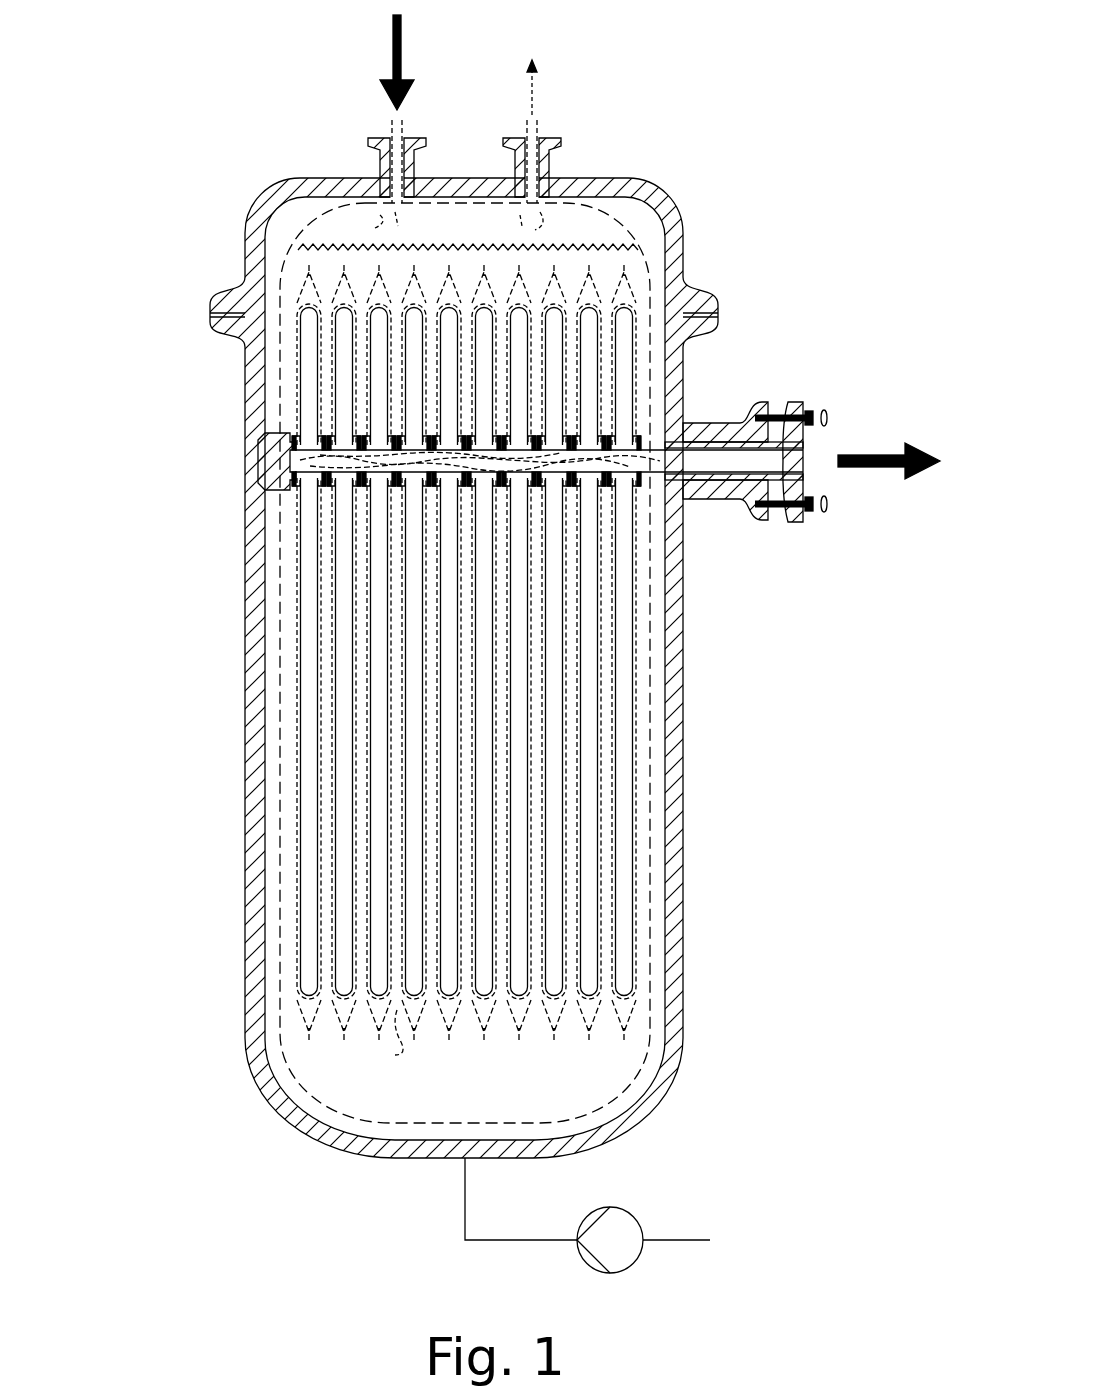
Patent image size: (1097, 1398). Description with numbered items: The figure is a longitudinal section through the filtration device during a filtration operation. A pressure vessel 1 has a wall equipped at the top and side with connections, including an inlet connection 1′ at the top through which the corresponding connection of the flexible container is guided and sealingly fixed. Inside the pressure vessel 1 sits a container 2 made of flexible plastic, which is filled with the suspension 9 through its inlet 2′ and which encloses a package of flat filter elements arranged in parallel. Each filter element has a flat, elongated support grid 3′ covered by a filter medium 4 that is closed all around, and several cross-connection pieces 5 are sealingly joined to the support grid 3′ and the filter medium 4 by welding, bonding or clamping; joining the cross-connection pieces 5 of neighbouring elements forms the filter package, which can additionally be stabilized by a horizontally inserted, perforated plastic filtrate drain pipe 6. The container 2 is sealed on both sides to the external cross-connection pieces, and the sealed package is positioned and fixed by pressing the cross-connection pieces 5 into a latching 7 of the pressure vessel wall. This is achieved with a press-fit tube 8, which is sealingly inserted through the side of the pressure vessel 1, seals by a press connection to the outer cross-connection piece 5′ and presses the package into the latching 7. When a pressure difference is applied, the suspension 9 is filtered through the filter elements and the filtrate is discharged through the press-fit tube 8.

The pressure vessel 1 is at (255, 395).
The inlet connection 1′ is at (372, 142).
The container 2 is at (615, 225).
The inlet 2′ is at (390, 130).
The support grid 3′ is at (337, 746).
The filter medium 4 is at (293, 1003).
The cross-connection pieces 5 is at (570, 437).
The outer cross-connection piece 5′ is at (650, 490).
The filtrate drain pipe 6 is at (479, 462).
The latching of the pressure vessel wall 7 is at (260, 465).
The press-fit tube 8 is at (797, 410).
The suspension 9 is at (497, 1083).